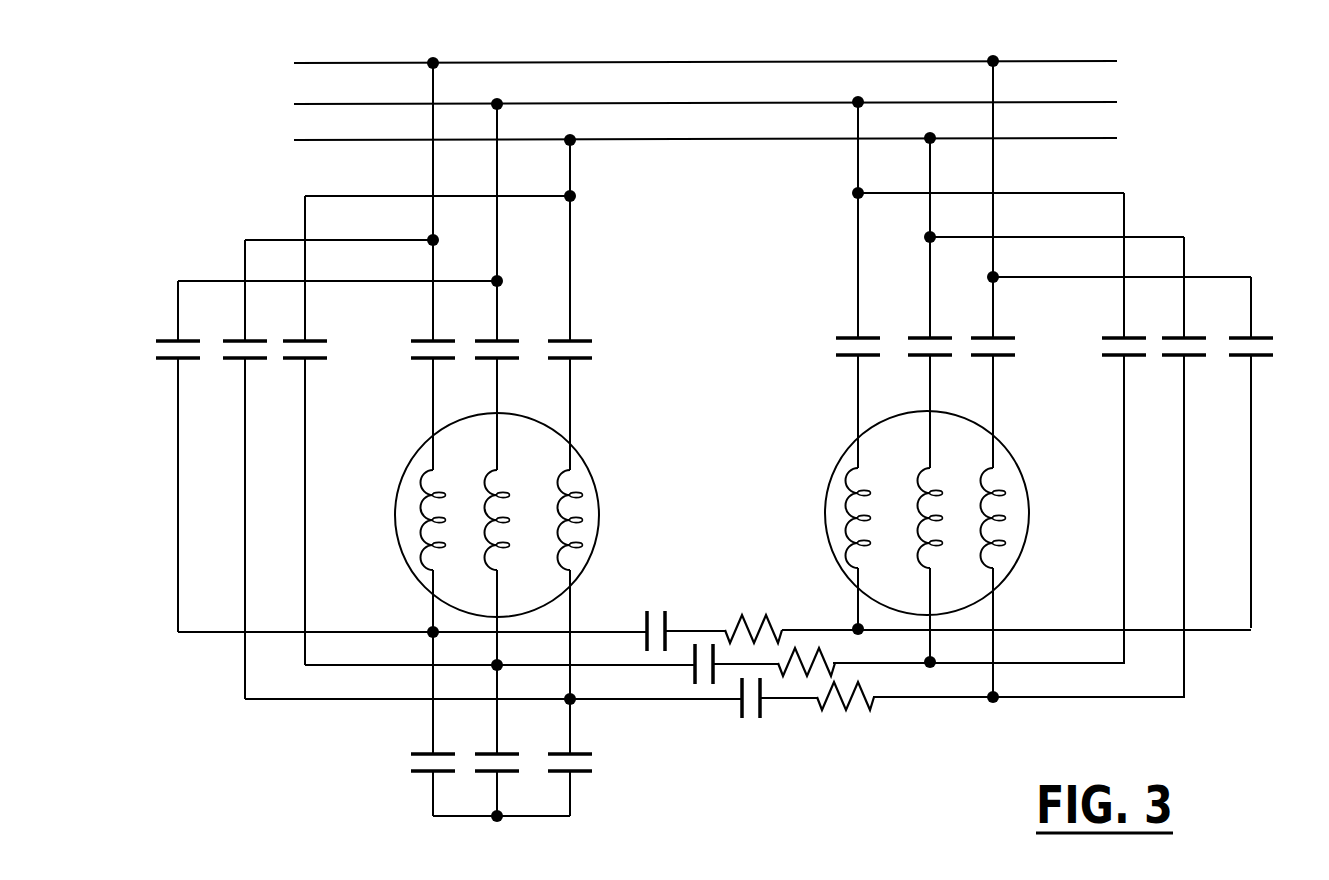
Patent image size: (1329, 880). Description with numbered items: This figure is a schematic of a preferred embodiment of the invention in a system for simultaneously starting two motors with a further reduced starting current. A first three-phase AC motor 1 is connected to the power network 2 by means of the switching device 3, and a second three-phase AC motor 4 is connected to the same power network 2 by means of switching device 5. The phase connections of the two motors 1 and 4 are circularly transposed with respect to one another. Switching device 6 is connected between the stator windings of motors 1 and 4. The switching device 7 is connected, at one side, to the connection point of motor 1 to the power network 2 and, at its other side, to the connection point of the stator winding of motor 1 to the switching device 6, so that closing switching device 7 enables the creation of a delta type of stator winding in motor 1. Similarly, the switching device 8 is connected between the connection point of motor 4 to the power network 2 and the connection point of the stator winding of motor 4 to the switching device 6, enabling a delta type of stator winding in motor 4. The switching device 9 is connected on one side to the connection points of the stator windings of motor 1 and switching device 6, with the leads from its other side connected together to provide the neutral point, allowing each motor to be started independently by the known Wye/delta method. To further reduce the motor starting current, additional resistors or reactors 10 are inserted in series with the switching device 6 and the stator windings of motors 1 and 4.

The first three-phase AC motor 1 is at (507, 515).
The power network 2 is at (705, 79).
The switching device 3 is at (513, 329).
The second three-phase AC motor 4 is at (939, 513).
The switching device 5 is at (937, 325).
The switching device 6 is at (703, 640).
The switching device 7 is at (255, 329).
The switching device 8 is at (1200, 325).
The switching device 9 is at (519, 773).
The resistors or reactors 10 is at (799, 644).